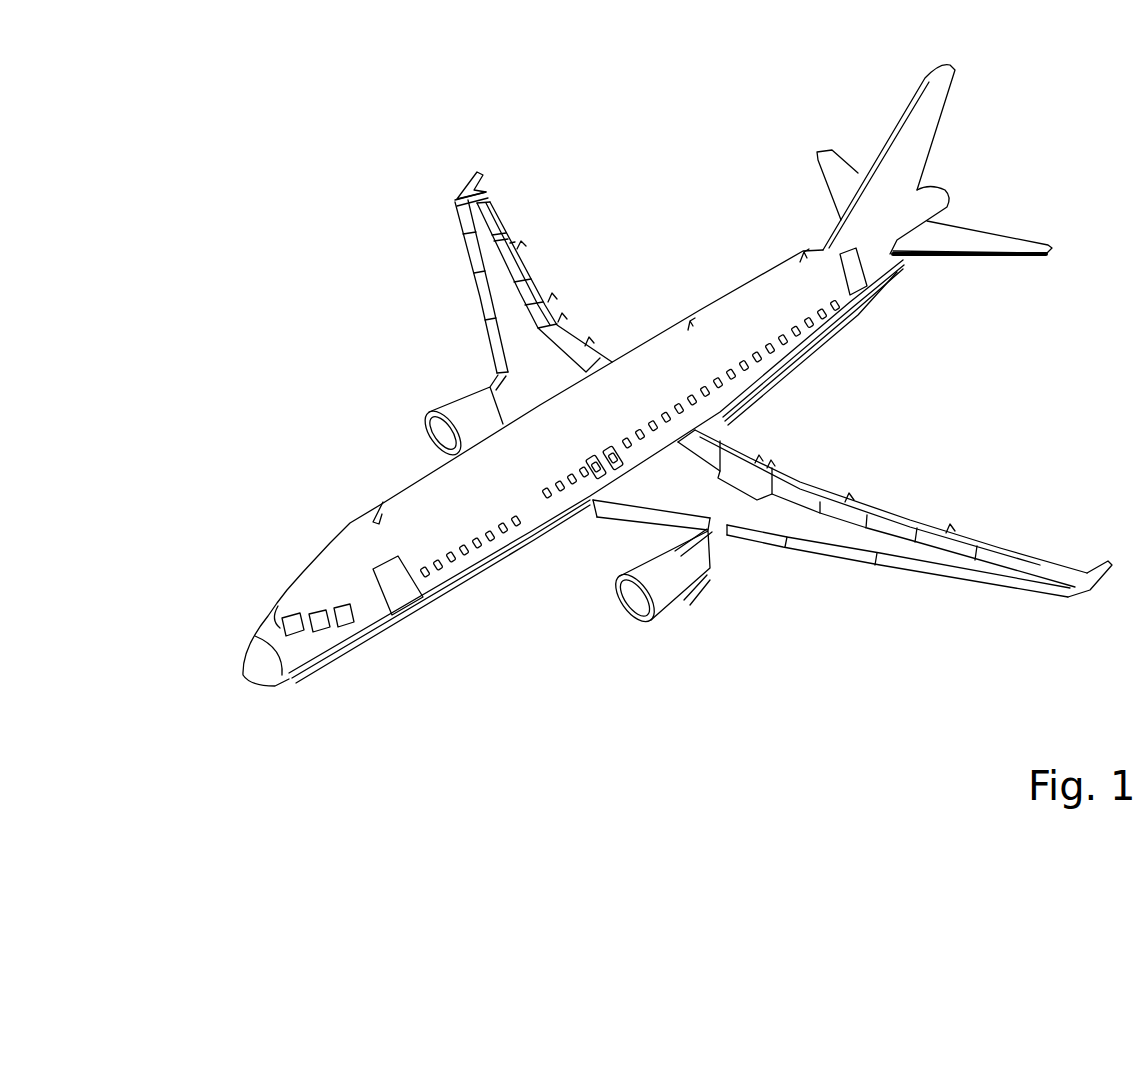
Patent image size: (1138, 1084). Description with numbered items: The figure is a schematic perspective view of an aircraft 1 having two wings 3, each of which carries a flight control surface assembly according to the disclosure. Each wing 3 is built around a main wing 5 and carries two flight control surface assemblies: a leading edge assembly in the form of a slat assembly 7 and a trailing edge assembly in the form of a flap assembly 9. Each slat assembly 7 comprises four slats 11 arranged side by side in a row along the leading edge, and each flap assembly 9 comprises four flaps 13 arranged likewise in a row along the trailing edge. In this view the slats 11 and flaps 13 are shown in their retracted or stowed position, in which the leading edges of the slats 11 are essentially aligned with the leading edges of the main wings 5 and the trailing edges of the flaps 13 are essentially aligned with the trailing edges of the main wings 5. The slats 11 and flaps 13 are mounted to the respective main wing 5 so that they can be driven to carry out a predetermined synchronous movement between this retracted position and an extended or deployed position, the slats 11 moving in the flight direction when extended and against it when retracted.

The aircraft 1 is at (290, 206).
The wing 3 is at (527, 207).
The main wing 5 is at (518, 388).
The slat assembly 7 is at (449, 304).
The flap assembly 9 is at (553, 262).
The slat 11 is at (460, 257).
The flap 13 is at (557, 308).